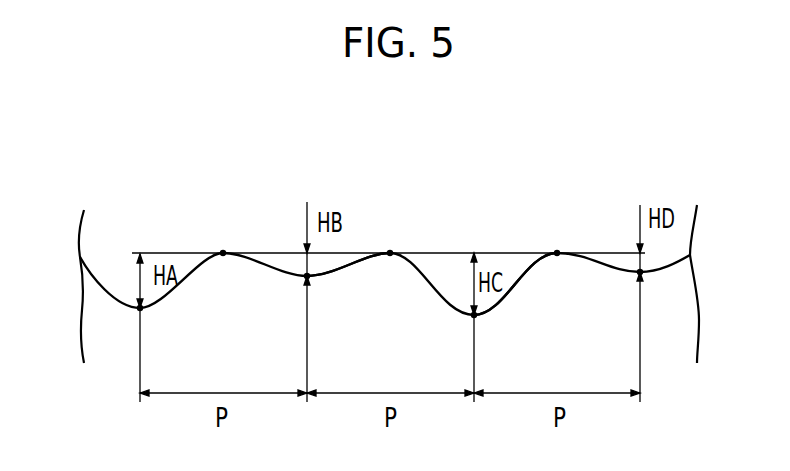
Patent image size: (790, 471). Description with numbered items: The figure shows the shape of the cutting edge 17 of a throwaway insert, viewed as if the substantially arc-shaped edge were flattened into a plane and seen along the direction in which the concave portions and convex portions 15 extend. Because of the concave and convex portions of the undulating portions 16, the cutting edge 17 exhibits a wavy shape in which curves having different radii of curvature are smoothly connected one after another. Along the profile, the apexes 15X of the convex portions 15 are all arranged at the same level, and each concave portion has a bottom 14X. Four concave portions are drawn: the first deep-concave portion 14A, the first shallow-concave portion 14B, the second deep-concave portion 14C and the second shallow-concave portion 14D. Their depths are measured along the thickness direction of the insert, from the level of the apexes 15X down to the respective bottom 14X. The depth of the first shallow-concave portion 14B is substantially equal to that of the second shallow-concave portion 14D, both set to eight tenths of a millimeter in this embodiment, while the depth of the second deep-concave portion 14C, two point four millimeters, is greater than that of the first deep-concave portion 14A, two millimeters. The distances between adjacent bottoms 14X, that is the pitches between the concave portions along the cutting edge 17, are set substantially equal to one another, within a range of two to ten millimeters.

The first deep-concave portion 14A is at (116, 296).
The first shallow-concave portion 14B is at (284, 266).
The second deep-concave portion 14C is at (455, 298).
The second shallow-concave portion 14D is at (616, 252).
The bottom of concave portion 14X is at (142, 309).
The convex portion 15 is at (258, 257).
The apex of convex portion 15X is at (223, 251).
The undulating portion 16 is at (358, 263).
The cutting edge 17 is at (533, 252).